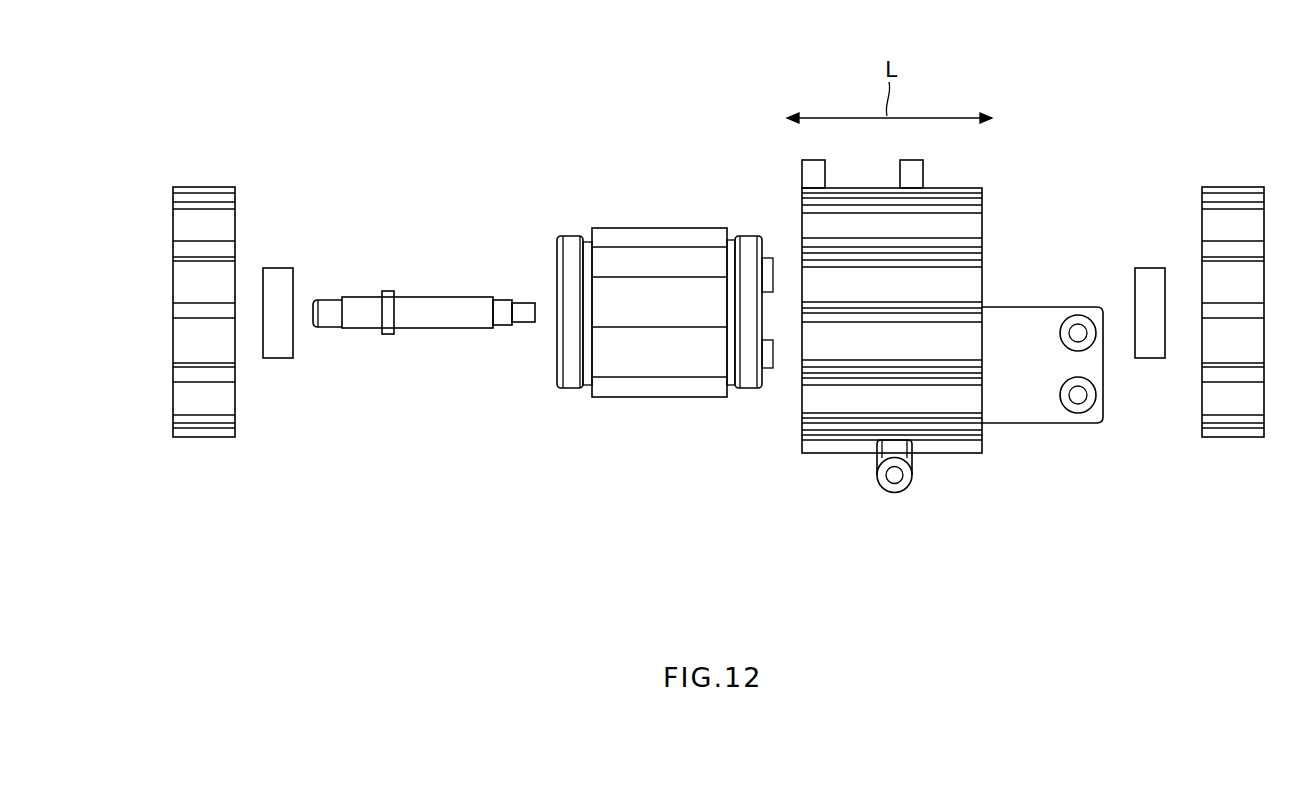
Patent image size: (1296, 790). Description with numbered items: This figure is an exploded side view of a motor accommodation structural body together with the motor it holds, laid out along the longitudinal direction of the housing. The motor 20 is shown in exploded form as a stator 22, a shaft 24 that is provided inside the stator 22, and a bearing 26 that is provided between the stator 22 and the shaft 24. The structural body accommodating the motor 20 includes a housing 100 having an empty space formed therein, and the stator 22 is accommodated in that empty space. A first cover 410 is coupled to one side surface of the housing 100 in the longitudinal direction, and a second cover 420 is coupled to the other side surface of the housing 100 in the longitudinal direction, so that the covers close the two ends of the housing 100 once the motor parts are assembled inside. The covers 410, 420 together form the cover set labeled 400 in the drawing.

The motor 20 is at (465, 498).
The stator 22 is at (654, 209).
The shaft 24 is at (414, 276).
The bearing 26 is at (277, 251).
The housing 100 is at (1006, 161).
The housing assembly 400 is at (243, 497).
The first cover 410 is at (1231, 173).
The second cover 420 is at (204, 173).